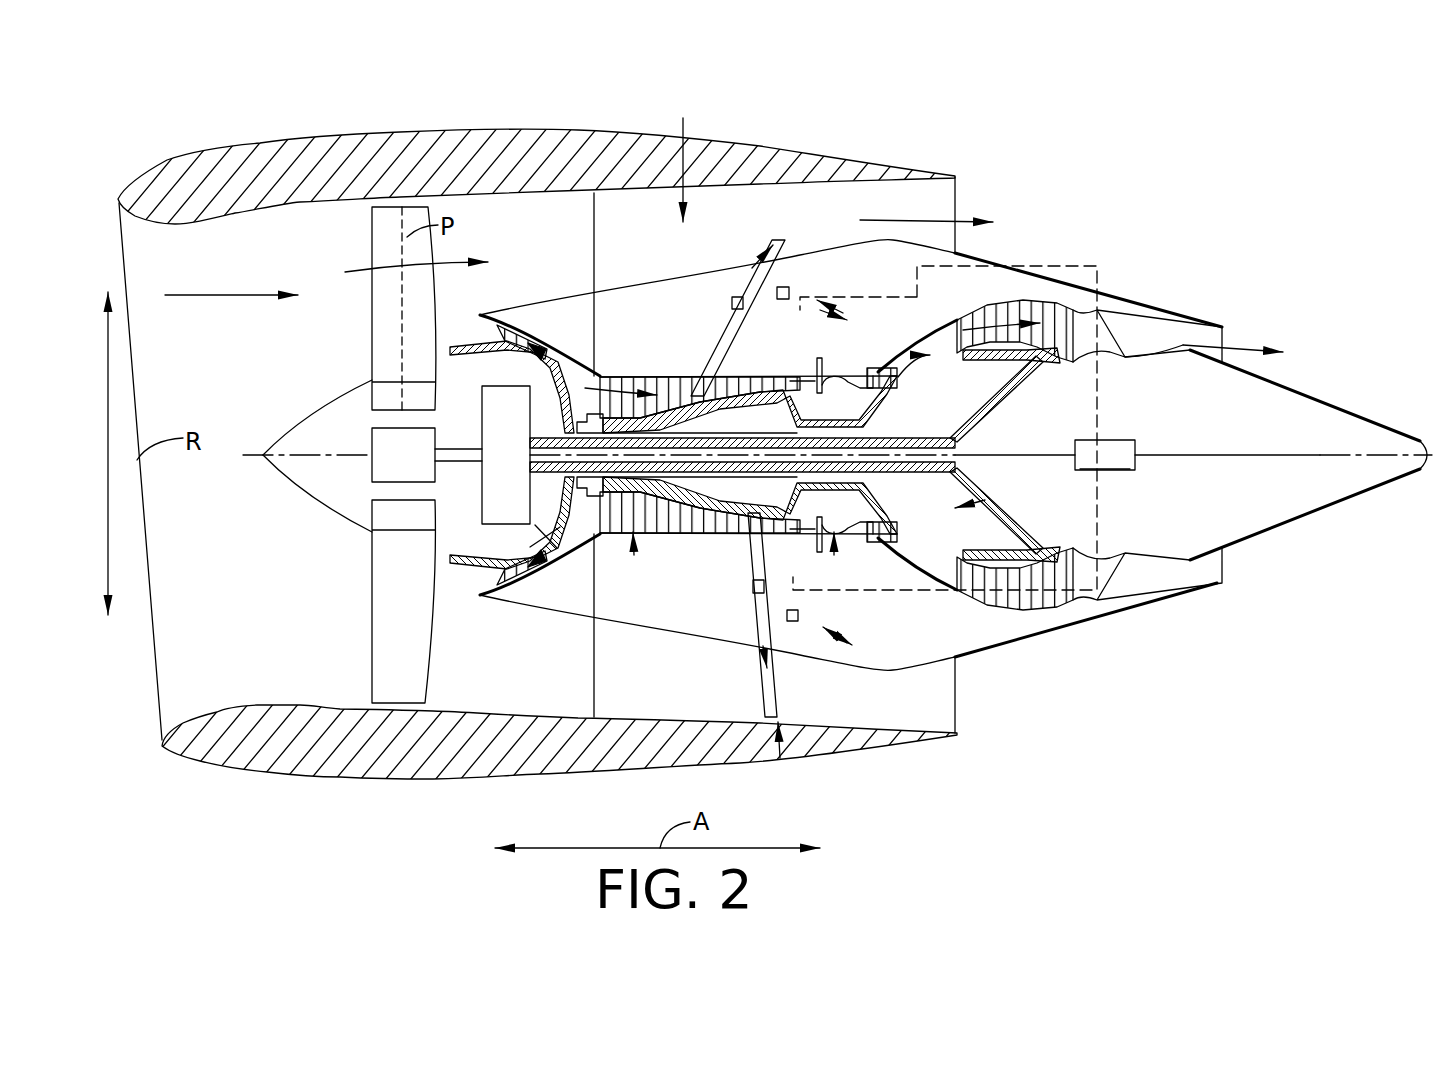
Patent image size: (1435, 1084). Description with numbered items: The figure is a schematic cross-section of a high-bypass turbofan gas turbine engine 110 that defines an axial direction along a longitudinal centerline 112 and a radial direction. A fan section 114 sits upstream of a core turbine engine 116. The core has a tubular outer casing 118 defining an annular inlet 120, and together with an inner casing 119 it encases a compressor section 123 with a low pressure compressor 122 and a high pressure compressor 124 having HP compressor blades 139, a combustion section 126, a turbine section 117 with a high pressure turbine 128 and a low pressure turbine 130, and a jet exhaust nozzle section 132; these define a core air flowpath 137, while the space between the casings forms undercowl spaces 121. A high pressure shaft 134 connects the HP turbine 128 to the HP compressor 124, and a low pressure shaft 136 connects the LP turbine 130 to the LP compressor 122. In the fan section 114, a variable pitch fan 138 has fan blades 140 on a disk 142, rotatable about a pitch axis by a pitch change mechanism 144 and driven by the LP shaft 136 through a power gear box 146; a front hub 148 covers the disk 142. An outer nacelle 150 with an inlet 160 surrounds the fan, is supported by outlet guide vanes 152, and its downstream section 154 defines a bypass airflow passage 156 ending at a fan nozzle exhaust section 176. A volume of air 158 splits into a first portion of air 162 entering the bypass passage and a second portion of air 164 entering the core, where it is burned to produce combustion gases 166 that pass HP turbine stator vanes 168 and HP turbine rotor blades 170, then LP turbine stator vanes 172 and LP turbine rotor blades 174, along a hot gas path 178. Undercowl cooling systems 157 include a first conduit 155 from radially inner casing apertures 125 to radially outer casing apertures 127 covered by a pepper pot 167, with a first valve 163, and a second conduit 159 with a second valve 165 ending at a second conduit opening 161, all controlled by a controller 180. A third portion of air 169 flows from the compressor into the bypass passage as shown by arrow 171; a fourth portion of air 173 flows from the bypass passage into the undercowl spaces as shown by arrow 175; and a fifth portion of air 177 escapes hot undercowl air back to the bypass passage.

The gas turbine engine 110 is at (1128, 162).
The longitudinal centerline 112 is at (1163, 440).
The fan section 114 is at (273, 240).
The core turbine engine 116 is at (742, 353).
The turbine section 117 is at (995, 500).
The outer casing 118 is at (777, 695).
The inner casing 119 is at (1043, 595).
The annular inlet 120 is at (488, 583).
The undercowl spaces 121 is at (990, 246).
The low pressure compressor 122 is at (527, 598).
The compressor section 123 is at (533, 527).
The high pressure compressor 124 is at (634, 555).
The radially inner casing apertures 125 is at (697, 375).
The combustion section 126 is at (834, 555).
The radially outer casing apertures 127 is at (778, 247).
The high pressure turbine 128 is at (907, 538).
The low pressure turbine 130 is at (1058, 612).
The jet exhaust nozzle section 132 is at (1123, 589).
The high pressure shaft 134 is at (848, 423).
The low pressure shaft 136 is at (983, 420).
The core air flowpath 137 is at (597, 640).
The variable pitch fan 138 is at (320, 513).
The high pressure compressor blades 139 is at (617, 513).
The fan blades 140 is at (367, 633).
The disk 142 is at (387, 397).
The pitch change mechanism 144 is at (372, 447).
The power gear box 146 is at (515, 403).
The front hub 148 is at (277, 473).
The outer nacelle 150 is at (421, 778).
The outlet guide vanes 152 is at (594, 218).
The downstream section 154 is at (840, 167).
The first conduit 155 is at (722, 350).
The bypass airflow passage 156 is at (802, 208).
The undercowl cooling systems 157 is at (683, 118).
The volume of air 158 is at (227, 293).
The second conduit 159 is at (782, 286).
The inlet 160 is at (165, 718).
The second conduit opening 161 is at (792, 293).
The first portion of air 162 is at (390, 263).
The first valve 163 is at (732, 303).
The second portion of air 164 is at (453, 330).
The second valve 165 is at (780, 300).
The combustion gases 166 is at (900, 370).
The pepper pot 167 is at (748, 272).
The HP turbine stator vanes 168 is at (850, 545).
The third portion of air 169 is at (700, 387).
The HP turbine rotor blades 170 is at (880, 513).
The arrow 171 is at (773, 258).
The LP turbine stator vanes 172 is at (963, 595).
The fourth portion of air 173 is at (757, 250).
The LP turbine rotor blades 174 is at (973, 595).
The arrow 175 is at (848, 322).
The fan nozzle exhaust section 176 is at (957, 198).
The fifth portion of air 177 is at (848, 314).
The hot gas path 178 is at (940, 333).
The controller 180 is at (1056, 428).